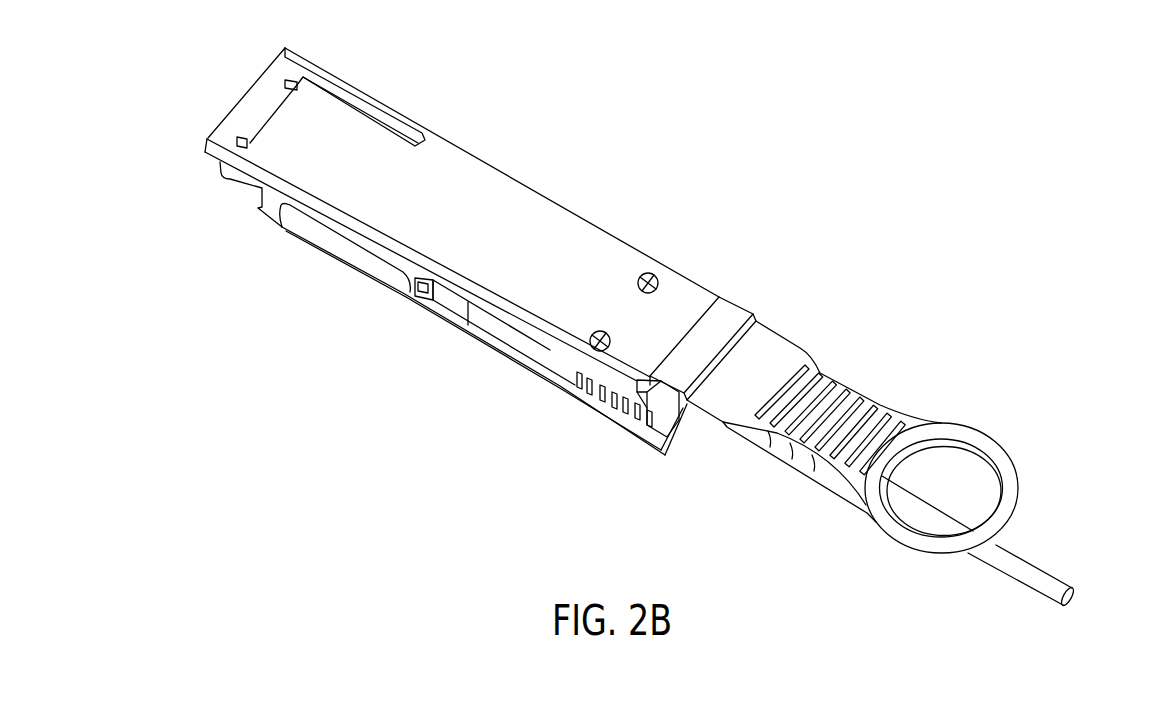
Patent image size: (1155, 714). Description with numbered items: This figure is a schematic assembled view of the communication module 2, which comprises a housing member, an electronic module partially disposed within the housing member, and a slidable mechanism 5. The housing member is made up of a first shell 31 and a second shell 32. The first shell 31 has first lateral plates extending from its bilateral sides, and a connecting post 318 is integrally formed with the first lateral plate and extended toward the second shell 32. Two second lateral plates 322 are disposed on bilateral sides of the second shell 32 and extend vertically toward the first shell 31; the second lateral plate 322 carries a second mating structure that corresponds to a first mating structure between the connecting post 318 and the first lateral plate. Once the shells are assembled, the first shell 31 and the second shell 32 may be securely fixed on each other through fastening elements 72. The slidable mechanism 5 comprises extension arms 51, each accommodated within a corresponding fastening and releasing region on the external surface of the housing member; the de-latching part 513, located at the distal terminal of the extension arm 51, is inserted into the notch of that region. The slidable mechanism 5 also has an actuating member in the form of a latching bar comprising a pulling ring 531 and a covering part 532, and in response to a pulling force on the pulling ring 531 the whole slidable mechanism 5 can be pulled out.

The communication module 2 is at (986, 80).
The first shell 31 is at (518, 202).
The fastening elements 72 is at (657, 277).
The connecting post 318 is at (270, 208).
The second lateral plate 322 is at (343, 248).
The de-latching part 513 is at (420, 298).
The extension arm 51 is at (522, 343).
The second shell 32 is at (547, 378).
The covering part 532 is at (728, 308).
The slidable mechanism 5 is at (778, 343).
The pulling ring 531 is at (1006, 480).